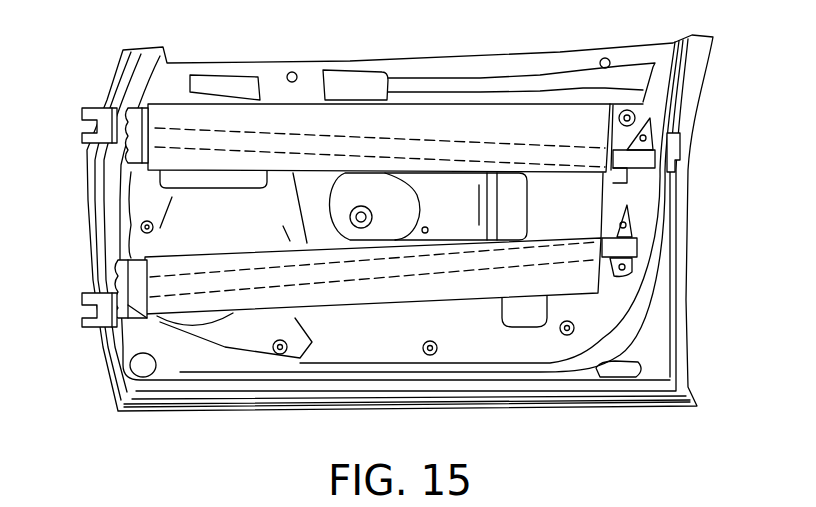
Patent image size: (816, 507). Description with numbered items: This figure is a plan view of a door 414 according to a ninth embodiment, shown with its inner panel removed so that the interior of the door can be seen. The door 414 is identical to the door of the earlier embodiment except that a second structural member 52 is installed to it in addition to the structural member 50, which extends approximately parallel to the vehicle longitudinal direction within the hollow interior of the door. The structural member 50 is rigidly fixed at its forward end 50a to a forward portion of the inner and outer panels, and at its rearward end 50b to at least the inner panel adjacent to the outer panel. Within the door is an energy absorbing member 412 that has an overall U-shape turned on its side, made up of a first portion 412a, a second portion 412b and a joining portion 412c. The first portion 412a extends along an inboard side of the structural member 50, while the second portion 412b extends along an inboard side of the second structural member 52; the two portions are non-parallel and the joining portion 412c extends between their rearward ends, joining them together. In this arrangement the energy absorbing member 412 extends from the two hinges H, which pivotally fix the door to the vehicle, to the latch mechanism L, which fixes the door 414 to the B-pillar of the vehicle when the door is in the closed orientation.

The door 414 is at (420, 56).
The energy absorbing member 412 is at (400, 187).
The first portion 412a is at (368, 290).
The second portion 412b is at (219, 158).
The joining portion 412c is at (568, 203).
The hinges H is at (82, 113).
The latch mechanism L is at (678, 143).
The structural member 50 is at (630, 268).
The forward end 50a is at (137, 283).
The rearward end 50b is at (622, 247).
The second structural member 52 is at (638, 163).